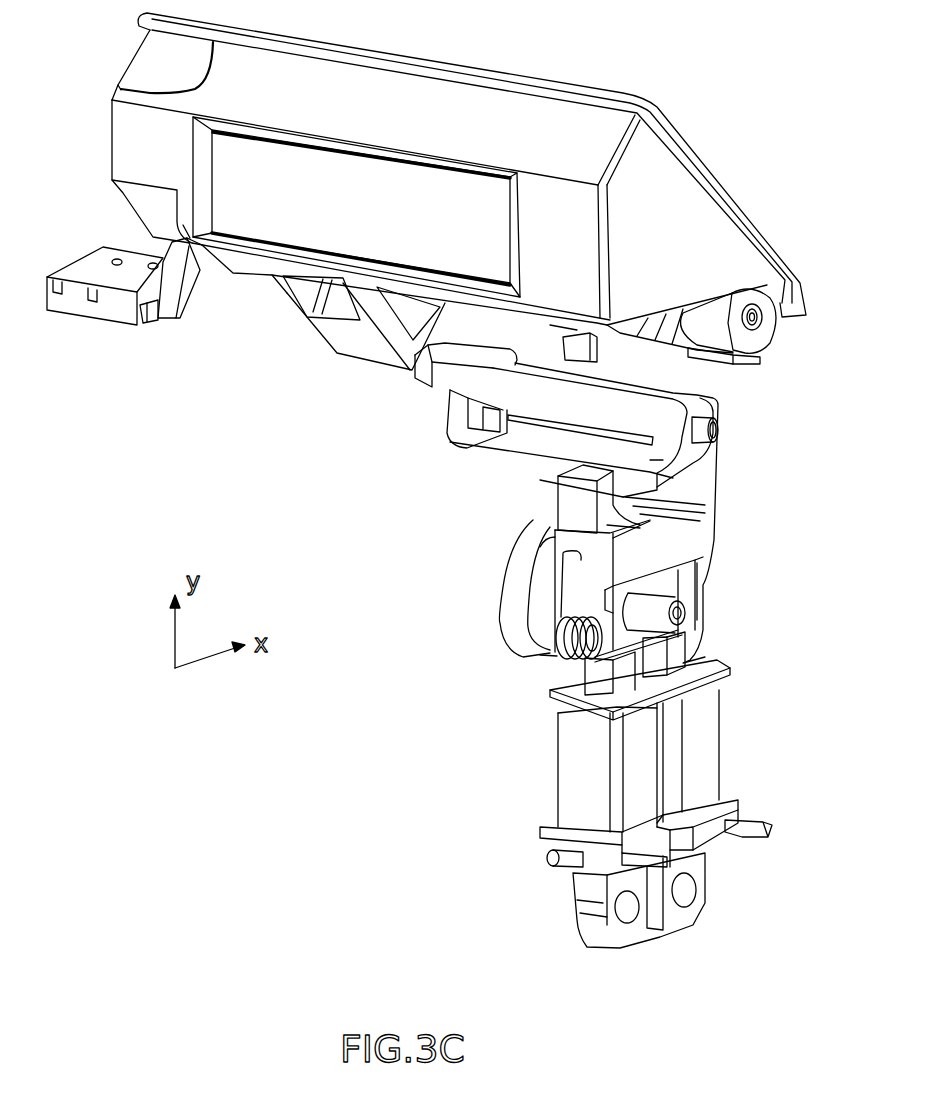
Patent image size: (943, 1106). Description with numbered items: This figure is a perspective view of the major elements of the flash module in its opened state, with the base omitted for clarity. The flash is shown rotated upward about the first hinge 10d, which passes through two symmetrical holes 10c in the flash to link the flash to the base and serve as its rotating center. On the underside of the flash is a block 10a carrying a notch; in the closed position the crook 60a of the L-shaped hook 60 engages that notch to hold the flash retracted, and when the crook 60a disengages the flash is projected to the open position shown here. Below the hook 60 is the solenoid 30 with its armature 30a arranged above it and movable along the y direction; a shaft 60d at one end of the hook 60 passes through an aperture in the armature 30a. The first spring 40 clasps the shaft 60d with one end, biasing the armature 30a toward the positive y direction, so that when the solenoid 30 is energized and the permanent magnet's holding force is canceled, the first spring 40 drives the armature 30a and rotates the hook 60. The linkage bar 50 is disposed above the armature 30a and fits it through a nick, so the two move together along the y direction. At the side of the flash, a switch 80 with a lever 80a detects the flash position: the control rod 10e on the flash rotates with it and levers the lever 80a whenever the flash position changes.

The block 10a is at (345, 350).
The holes 10c is at (765, 330).
The first hinge 10d is at (738, 357).
The control rod 10e is at (178, 293).
The solenoid 30 is at (560, 770).
The armature 30a is at (690, 655).
The first spring 40 is at (563, 658).
The linkage bar 50 is at (560, 488).
The hook 60 is at (722, 460).
The crook 60a is at (413, 375).
The shaft 60d is at (685, 610).
The switch 80 is at (68, 315).
The lever 80a is at (147, 318).